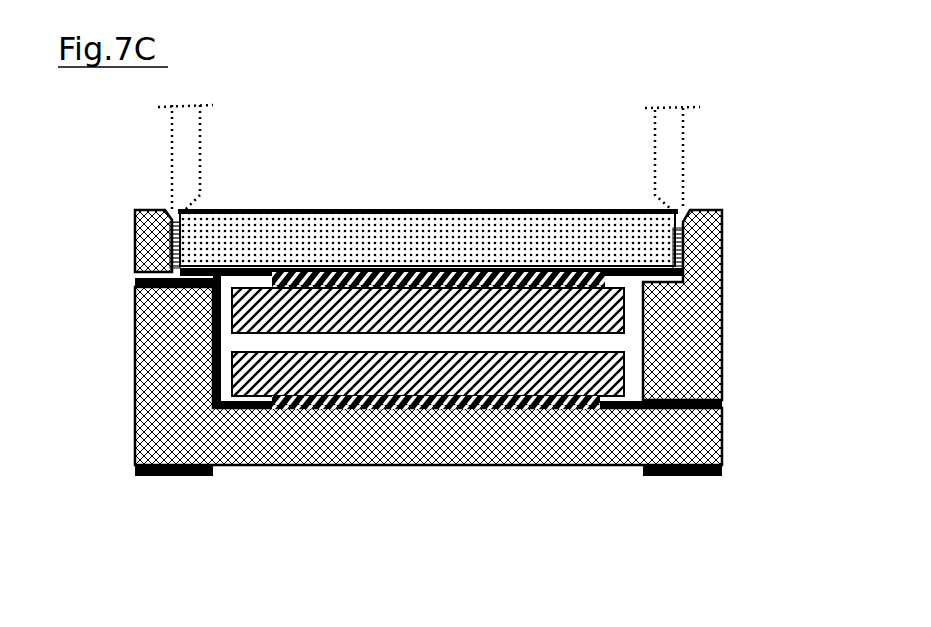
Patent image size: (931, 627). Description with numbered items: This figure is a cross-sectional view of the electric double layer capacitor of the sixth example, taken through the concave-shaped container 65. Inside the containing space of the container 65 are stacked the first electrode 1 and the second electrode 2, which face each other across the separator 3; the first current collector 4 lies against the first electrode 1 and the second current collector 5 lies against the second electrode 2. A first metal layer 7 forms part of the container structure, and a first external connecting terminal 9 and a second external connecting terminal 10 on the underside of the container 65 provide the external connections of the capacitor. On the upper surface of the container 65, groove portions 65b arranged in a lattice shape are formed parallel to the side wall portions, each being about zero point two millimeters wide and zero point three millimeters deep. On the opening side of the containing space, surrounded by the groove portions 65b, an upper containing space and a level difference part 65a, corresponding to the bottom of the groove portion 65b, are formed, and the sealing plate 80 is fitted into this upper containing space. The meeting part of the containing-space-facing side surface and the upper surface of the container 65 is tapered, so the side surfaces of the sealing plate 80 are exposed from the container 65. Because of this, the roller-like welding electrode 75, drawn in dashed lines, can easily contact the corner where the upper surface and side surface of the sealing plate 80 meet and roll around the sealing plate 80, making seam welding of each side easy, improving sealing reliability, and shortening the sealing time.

The first electrode 1 is at (243, 318).
The second electrode 2 is at (245, 388).
The separator 3 is at (637, 347).
The first current collector 4 is at (522, 272).
The second current collector 5 is at (370, 403).
The first metal layer 7 is at (690, 250).
The first external connecting terminal 9 is at (138, 470).
The second external connecting terminal 10 is at (725, 438).
The container 65 is at (190, 420).
The level difference part 65a is at (172, 248).
The groove portion 65b is at (200, 248).
The welding electrode 75 is at (660, 150).
The sealing plate 80 is at (440, 210).